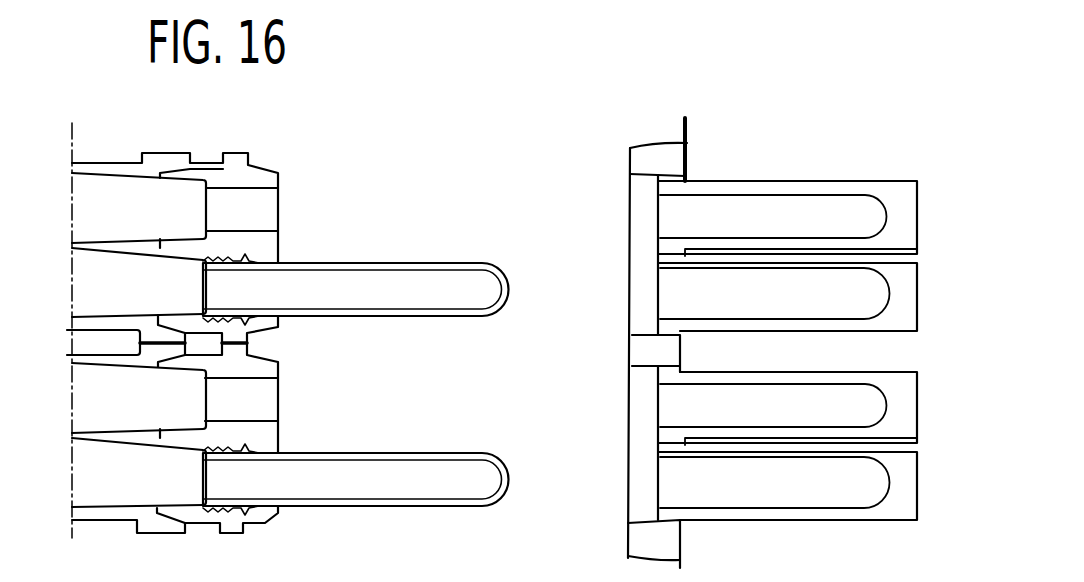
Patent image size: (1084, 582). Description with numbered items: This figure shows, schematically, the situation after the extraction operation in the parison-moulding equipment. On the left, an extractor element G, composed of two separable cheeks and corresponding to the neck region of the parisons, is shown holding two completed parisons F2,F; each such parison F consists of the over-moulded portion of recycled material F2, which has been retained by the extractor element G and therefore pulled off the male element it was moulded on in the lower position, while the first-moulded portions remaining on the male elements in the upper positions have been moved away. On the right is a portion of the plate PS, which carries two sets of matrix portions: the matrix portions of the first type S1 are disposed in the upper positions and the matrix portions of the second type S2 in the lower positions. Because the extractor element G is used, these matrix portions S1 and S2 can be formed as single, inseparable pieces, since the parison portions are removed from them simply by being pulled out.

The extractor element G is at (242, 154).
The completed parison F2,F is at (356, 359).
The portion of recycled material F2 is at (356, 359).
The parison F is at (390, 263).
The plate PS is at (776, 291).
The matrix portion of the first type S1 is at (812, 181).
The matrix portion of the second type S2 is at (917, 275).